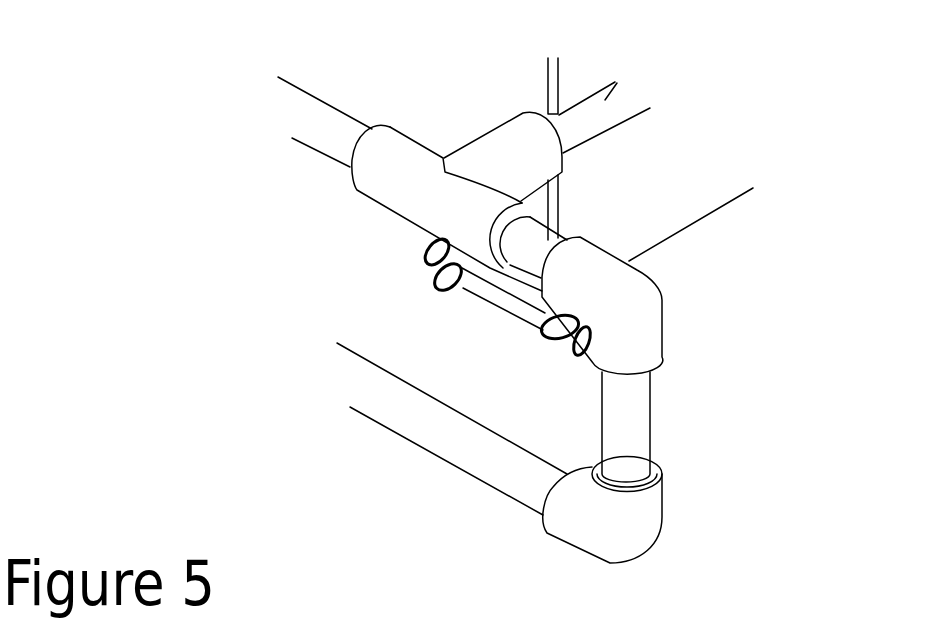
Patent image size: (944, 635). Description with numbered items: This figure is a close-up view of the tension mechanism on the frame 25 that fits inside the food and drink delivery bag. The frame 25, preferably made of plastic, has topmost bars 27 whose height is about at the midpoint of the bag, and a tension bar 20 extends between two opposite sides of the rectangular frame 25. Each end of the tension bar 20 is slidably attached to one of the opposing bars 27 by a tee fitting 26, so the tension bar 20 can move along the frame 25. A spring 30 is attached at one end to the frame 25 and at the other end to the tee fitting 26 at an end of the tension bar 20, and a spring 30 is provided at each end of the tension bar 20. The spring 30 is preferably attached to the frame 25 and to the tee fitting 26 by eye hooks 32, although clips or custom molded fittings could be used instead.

The tension bar 20 is at (611, 78).
The frame 25 is at (632, 413).
The tee fitting 26 is at (500, 147).
The topmost bar 27 is at (574, 201).
The spring 30 is at (492, 300).
The eye hook 32 is at (425, 247).